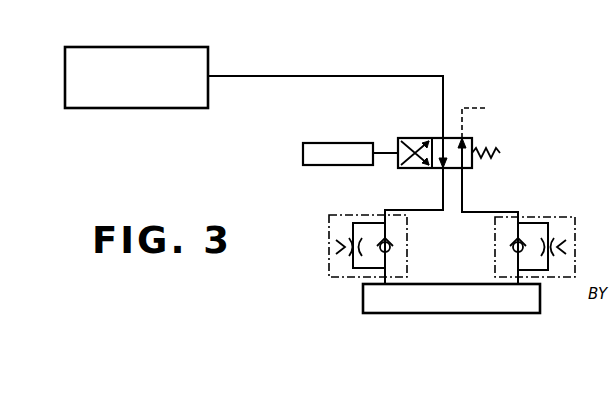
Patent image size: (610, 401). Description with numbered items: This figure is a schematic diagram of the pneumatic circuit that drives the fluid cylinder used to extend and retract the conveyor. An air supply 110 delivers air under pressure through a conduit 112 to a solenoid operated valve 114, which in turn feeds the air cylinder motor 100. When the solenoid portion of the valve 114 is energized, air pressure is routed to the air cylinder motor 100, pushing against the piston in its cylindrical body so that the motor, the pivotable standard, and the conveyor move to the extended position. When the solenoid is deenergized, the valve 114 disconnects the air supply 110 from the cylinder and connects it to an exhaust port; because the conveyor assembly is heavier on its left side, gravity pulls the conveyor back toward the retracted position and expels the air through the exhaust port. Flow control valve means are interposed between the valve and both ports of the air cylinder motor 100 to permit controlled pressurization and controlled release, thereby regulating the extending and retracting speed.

The air cylinder motor 100 is at (400, 313).
The air supply 110 is at (82, 47).
The conduit 112 is at (367, 76).
The solenoid operated valve 114 is at (430, 138).